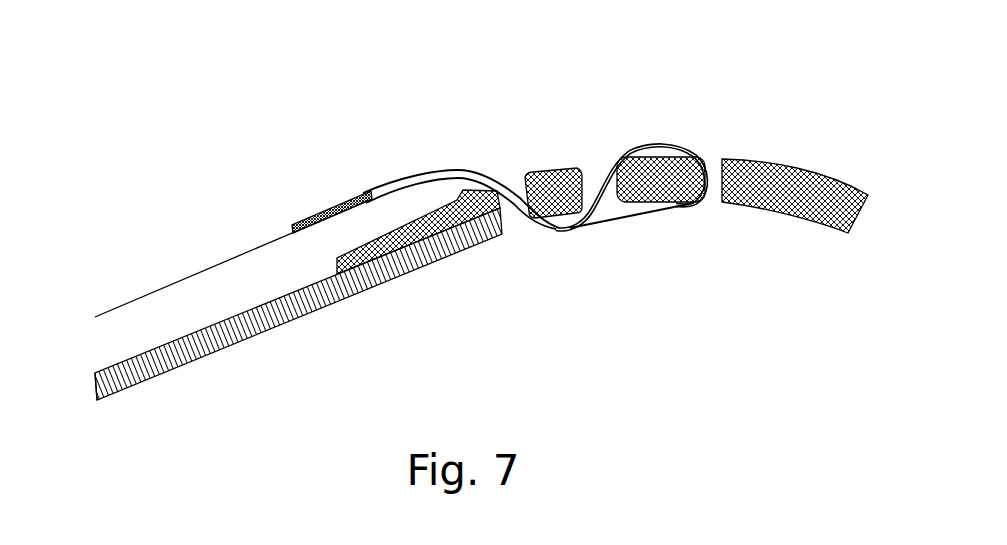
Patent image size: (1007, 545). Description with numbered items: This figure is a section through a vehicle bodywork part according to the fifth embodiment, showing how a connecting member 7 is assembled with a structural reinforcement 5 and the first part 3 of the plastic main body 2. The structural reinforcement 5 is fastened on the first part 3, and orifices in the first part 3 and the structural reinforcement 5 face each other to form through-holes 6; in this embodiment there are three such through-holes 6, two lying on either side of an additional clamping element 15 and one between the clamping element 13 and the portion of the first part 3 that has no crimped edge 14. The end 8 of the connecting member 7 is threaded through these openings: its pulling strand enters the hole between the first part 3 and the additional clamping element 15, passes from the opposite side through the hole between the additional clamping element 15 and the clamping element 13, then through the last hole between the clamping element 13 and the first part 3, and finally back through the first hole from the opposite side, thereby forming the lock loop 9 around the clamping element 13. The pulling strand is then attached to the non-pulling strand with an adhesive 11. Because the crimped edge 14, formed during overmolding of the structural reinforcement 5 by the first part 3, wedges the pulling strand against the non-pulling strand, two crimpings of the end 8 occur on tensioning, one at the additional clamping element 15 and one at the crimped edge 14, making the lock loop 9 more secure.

The main body 2 is at (125, 378).
The first part 3 is at (288, 321).
The structural reinforcement 5 is at (823, 180).
The through-hole 6 is at (598, 168).
The connecting member 7 is at (172, 285).
The end 8 is at (251, 234).
The lock loop 9 is at (656, 217).
The adhesive 11 is at (337, 210).
The clamping element 13 is at (690, 203).
The crimped edge 14 is at (477, 187).
The additional clamping element 15 is at (540, 177).